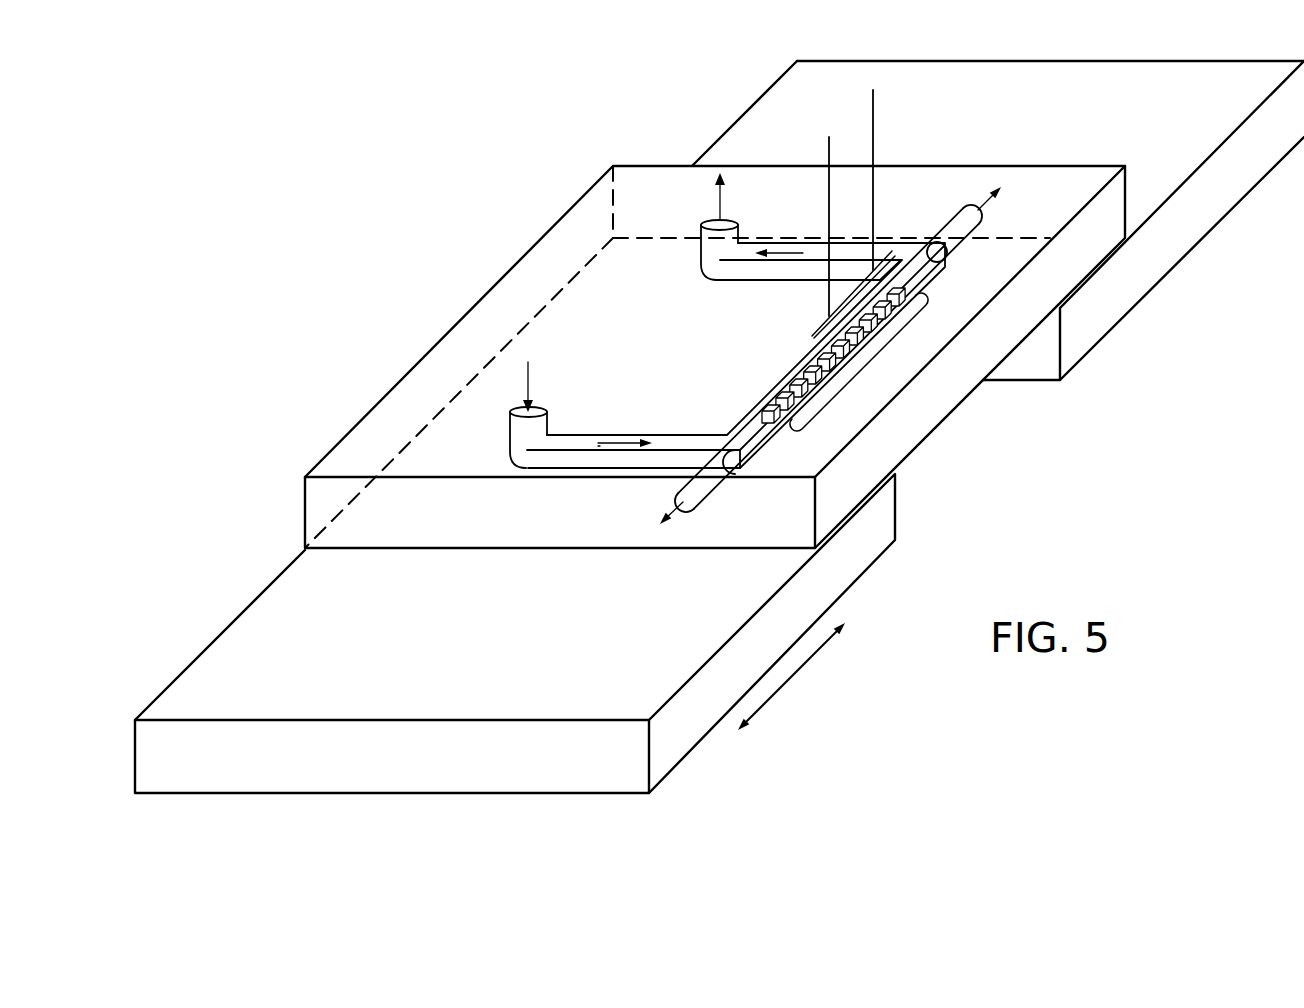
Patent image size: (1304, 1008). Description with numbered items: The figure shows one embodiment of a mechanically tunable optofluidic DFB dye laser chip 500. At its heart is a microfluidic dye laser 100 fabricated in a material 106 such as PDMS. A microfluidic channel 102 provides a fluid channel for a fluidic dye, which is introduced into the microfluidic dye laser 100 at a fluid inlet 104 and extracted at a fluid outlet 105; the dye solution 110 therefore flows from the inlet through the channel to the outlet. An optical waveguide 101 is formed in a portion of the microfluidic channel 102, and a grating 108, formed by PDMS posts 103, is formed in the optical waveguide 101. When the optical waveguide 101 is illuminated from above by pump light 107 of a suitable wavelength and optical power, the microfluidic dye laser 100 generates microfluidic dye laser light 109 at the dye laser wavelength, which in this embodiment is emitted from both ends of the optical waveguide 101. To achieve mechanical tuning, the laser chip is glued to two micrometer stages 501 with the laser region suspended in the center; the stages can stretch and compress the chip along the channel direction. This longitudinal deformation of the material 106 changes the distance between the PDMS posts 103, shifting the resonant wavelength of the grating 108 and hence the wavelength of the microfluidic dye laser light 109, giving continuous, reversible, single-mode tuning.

The microfluidic dye laser 100 is at (434, 331).
The optical waveguide 101 is at (927, 276).
The microfluidic channel 102 is at (682, 435).
The PDMS posts 103 is at (767, 406).
The fluid inlet 104 is at (572, 409).
The fluid outlet 105 is at (675, 193).
The material 106 is at (519, 266).
The pump light 107 is at (855, 140).
The grating 108 is at (858, 370).
The microfluidic dye laser light 109 is at (708, 483).
The dye solution 110 is at (533, 462).
The mechanically tunable optofluidic DFB dye laser chip 500 is at (1268, 40).
The stage block 501 is at (1210, 236).